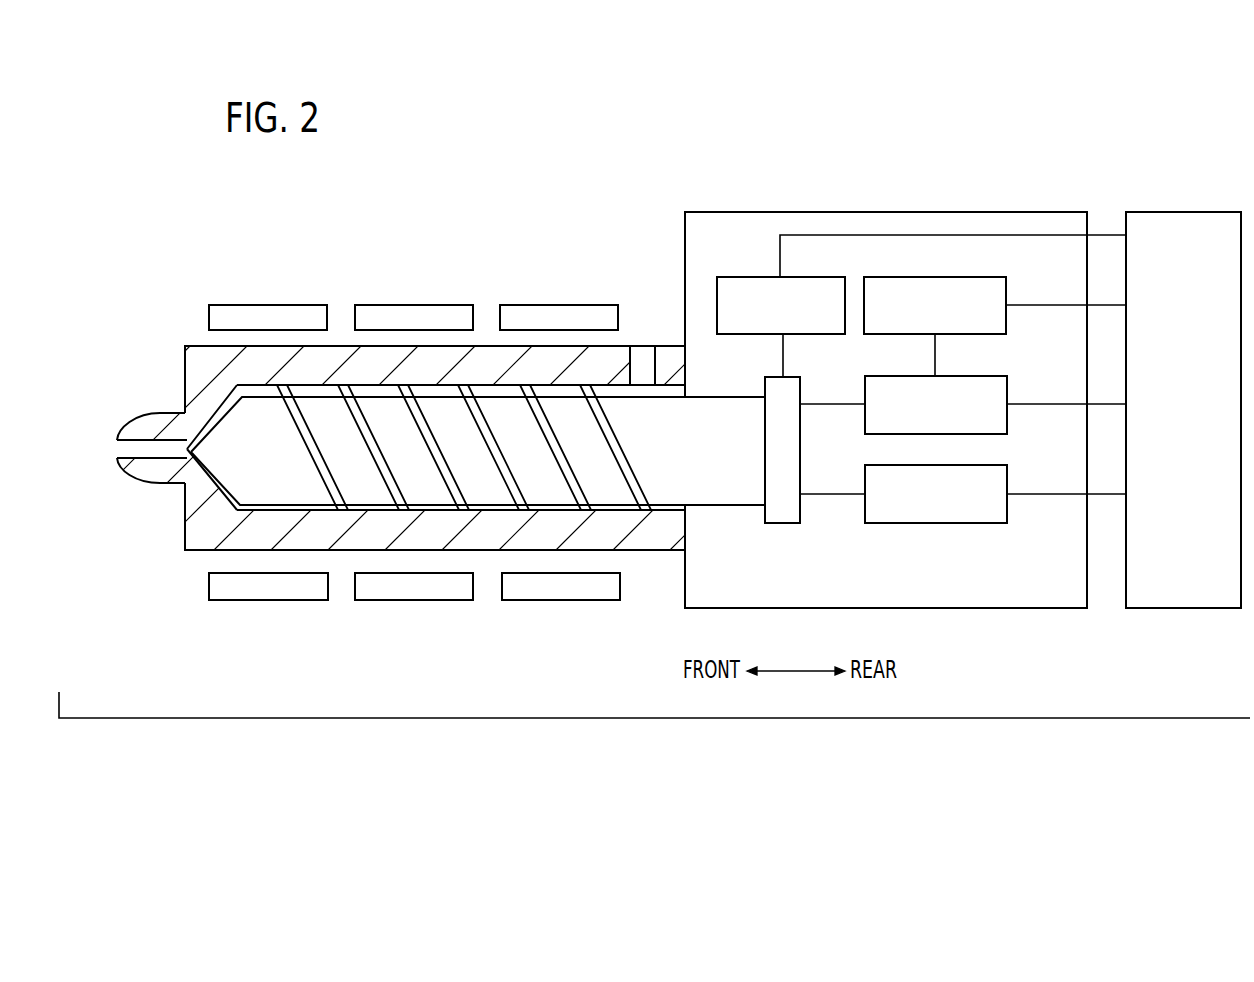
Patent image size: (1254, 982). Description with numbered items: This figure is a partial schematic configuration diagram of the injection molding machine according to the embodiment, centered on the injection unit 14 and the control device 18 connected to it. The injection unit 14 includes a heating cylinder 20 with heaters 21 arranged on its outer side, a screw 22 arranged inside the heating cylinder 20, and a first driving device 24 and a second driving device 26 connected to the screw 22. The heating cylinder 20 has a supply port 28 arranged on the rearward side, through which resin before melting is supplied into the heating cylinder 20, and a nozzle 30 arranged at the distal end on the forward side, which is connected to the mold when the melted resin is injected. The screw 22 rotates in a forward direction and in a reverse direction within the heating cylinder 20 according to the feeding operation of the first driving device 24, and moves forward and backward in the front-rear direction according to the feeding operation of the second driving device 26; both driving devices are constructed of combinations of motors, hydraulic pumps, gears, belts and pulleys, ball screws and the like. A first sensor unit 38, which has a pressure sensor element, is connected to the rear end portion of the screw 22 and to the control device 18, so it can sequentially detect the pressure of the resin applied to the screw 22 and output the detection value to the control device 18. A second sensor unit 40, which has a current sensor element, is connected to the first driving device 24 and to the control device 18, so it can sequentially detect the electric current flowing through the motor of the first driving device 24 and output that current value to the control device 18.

The injection unit 14 is at (853, 192).
The control device 18 is at (1183, 610).
The heating cylinder 20 is at (345, 346).
The heaters 21 is at (268, 302).
The screw 22 is at (257, 475).
The first driving device 24 is at (937, 375).
The second driving device 26 is at (918, 525).
The supply port 28 is at (640, 358).
The nozzle 30 is at (112, 447).
The first sensor unit 38 is at (765, 276).
The second sensor unit 40 is at (1008, 287).